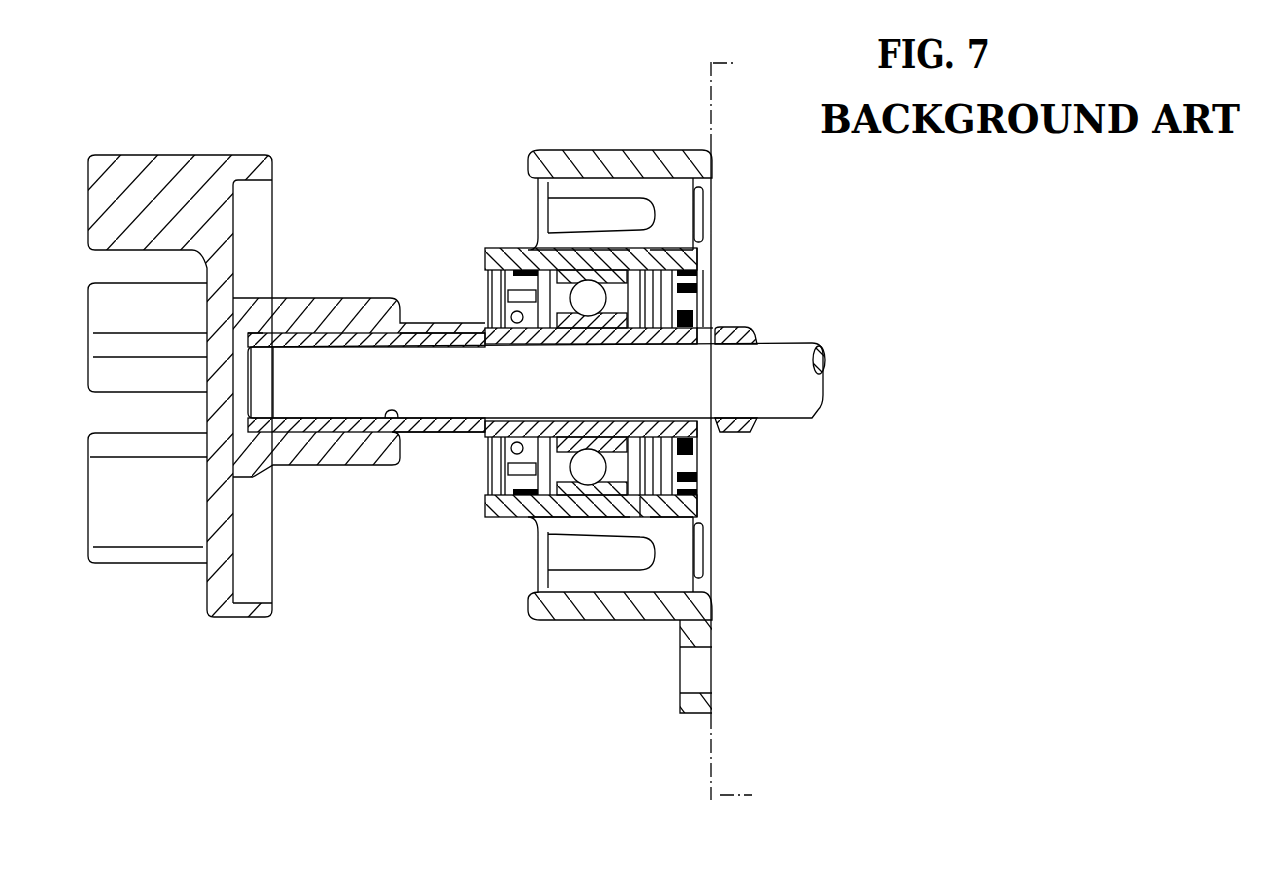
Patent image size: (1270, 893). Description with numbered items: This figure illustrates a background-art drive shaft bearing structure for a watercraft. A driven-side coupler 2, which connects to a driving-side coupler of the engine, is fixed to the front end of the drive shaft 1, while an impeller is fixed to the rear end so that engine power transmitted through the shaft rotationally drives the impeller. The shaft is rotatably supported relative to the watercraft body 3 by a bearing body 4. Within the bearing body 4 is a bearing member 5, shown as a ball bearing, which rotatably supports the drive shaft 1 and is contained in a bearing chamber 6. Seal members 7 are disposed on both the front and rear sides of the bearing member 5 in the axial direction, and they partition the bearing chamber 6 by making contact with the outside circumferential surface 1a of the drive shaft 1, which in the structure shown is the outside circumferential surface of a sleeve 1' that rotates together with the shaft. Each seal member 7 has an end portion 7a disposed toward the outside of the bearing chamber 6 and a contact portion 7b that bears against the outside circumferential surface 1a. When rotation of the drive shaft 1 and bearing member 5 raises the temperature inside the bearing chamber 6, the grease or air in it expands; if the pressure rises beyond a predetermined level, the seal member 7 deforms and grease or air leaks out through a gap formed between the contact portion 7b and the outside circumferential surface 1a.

The drive shaft 1 is at (566, 354).
The outside circumferential surface 1a is at (738, 332).
The sleeve 1' is at (765, 452).
The driven-side coupler 2 is at (172, 592).
The watercraft body 3 is at (706, 93).
The bearing body 4 is at (597, 622).
The bearing member 5 is at (588, 300).
The bearing chamber 6 is at (645, 497).
The seal member 7 is at (512, 285).
The end portion 7a is at (712, 325).
The contact portion 7b is at (700, 337).